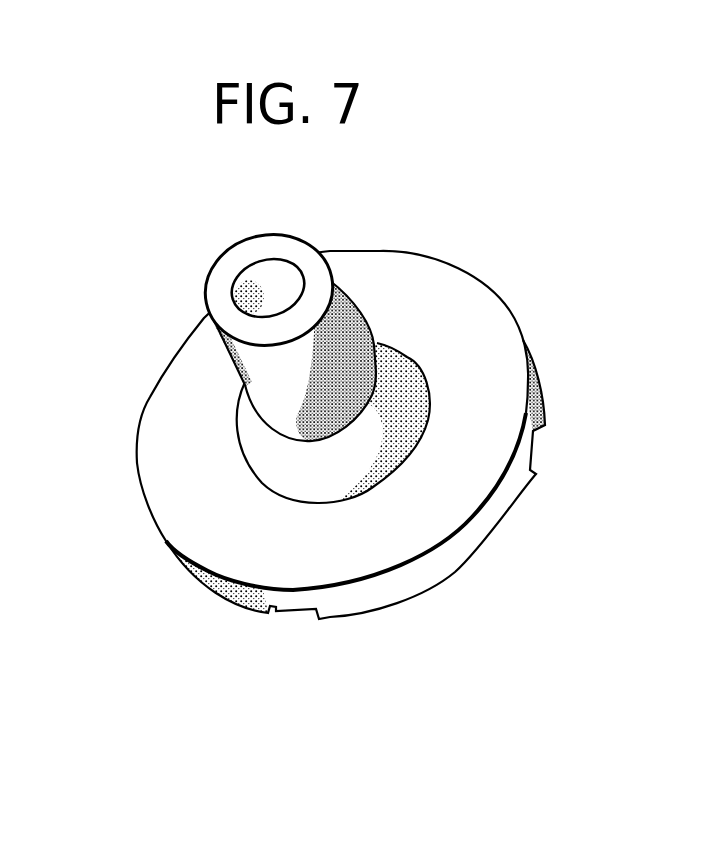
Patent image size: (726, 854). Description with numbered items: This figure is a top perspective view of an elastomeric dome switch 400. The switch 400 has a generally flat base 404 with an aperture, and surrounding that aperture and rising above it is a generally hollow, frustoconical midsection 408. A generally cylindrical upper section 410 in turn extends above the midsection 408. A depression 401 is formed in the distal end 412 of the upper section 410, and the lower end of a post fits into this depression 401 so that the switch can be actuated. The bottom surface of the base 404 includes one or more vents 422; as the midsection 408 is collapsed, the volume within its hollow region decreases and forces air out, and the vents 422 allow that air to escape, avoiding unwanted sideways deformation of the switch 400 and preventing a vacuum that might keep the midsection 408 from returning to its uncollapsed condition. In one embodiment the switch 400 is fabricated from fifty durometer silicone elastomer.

The dome switch 400 is at (535, 262).
The depression 401 is at (288, 277).
The base 404 is at (497, 410).
The midsection 408 is at (300, 473).
The upper section 410 is at (260, 372).
The distal end 412 is at (256, 243).
The vents 422 is at (535, 448).